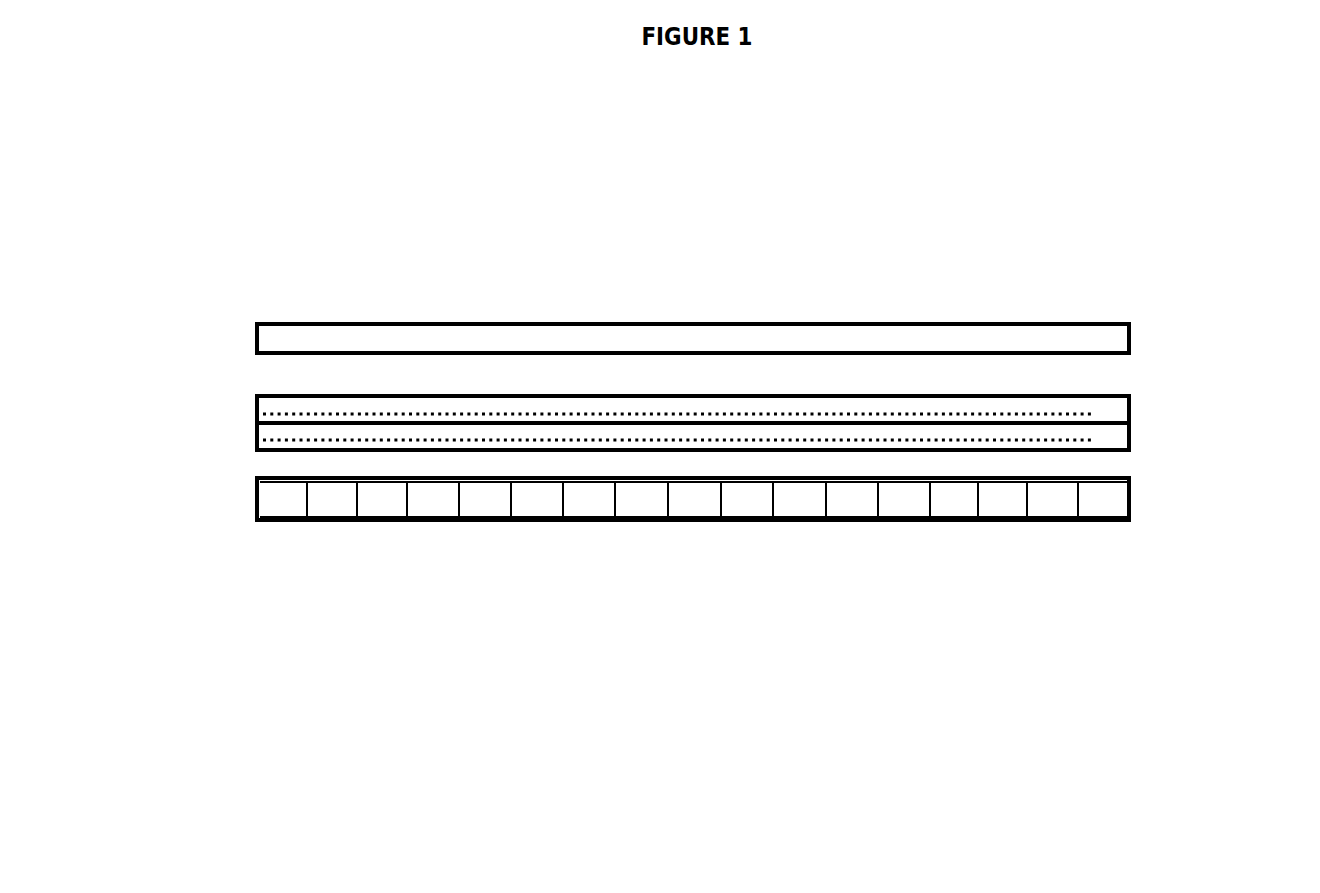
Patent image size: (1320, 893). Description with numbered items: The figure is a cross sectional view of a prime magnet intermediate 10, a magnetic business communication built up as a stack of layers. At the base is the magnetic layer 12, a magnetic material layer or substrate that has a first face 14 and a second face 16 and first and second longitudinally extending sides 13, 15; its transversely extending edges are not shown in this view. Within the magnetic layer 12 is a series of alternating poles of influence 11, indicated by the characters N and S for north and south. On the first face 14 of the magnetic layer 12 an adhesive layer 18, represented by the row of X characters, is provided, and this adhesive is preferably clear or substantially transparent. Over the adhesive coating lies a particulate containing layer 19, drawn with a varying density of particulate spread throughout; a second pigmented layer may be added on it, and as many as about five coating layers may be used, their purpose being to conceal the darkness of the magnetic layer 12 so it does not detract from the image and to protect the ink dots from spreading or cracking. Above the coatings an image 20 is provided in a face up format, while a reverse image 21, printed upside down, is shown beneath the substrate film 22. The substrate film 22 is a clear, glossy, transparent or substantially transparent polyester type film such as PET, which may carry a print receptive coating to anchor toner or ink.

The prime magnet intermediate 10 is at (172, 388).
The alternating poles of influence 11 is at (340, 507).
The magnetic layer 12 is at (760, 535).
The first longitudinally extending side 13 is at (253, 498).
The first face 14 is at (1067, 478).
The second longitudinally extending side 15 is at (1132, 488).
The second face 16 is at (1058, 520).
The adhesive layer 18 is at (258, 460).
The particulate containing layer 19 is at (255, 435).
The image 20 is at (397, 366).
The reverse image 21 is at (1025, 363).
The substrate film 22 is at (902, 338).